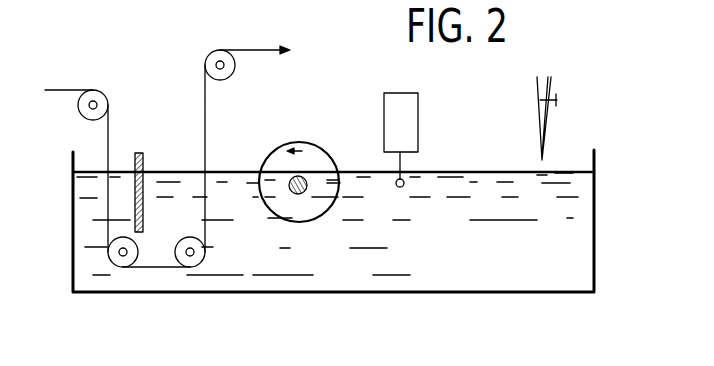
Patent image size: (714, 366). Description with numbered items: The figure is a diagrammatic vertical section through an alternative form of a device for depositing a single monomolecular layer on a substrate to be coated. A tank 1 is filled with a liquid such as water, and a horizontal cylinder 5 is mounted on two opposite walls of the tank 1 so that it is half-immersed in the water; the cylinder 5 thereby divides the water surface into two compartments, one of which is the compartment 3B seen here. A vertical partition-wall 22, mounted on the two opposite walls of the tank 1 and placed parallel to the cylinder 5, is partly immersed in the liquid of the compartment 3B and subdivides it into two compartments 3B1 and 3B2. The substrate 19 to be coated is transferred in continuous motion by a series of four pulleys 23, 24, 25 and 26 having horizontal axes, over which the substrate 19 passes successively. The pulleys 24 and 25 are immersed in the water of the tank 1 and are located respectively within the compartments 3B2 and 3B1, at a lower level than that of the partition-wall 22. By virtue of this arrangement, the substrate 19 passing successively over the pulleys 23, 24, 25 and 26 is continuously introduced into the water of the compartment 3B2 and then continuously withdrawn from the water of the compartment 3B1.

The tank 1 is at (594, 221).
The compartment 3B is at (253, 136).
The compartment 3B1 is at (177, 188).
The compartment 3B2 is at (97, 191).
The horizontal cylinder 5 is at (322, 158).
The substrate 19 is at (205, 100).
The vertical partition-wall 22 is at (140, 153).
The pulley 23 is at (88, 120).
The pulley 24 is at (120, 260).
The pulley 25 is at (196, 260).
The pulley 26 is at (234, 70).